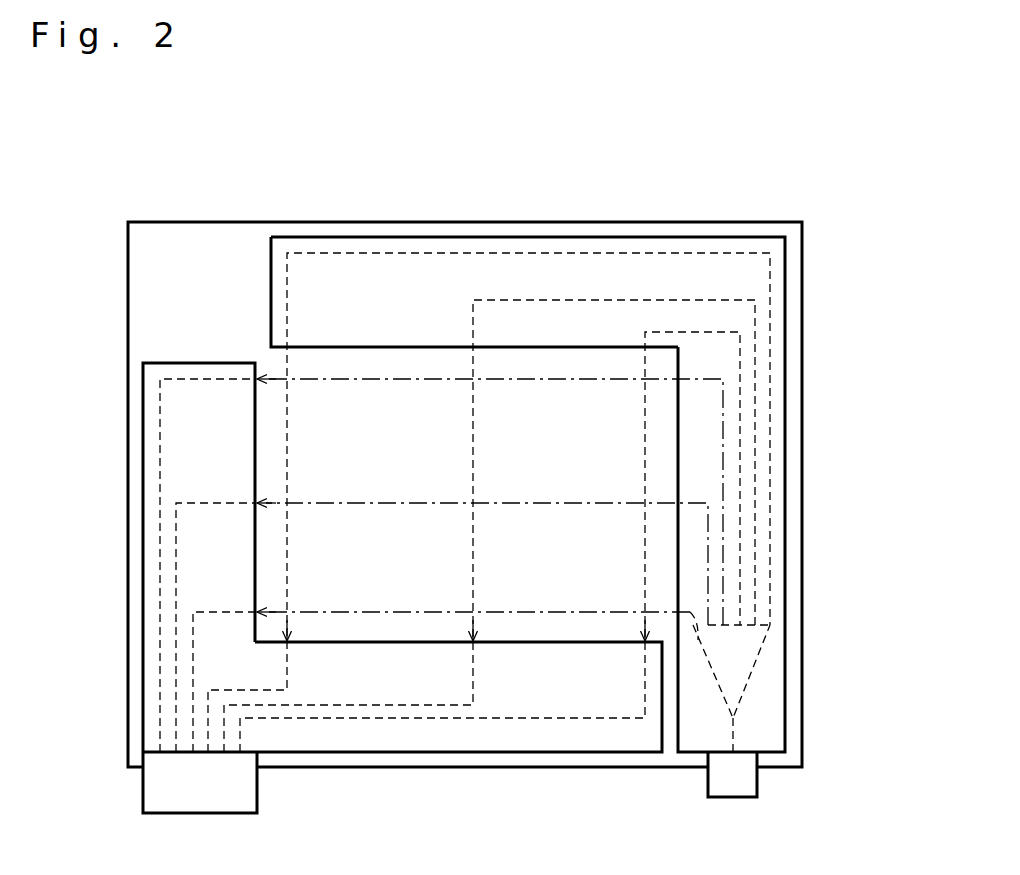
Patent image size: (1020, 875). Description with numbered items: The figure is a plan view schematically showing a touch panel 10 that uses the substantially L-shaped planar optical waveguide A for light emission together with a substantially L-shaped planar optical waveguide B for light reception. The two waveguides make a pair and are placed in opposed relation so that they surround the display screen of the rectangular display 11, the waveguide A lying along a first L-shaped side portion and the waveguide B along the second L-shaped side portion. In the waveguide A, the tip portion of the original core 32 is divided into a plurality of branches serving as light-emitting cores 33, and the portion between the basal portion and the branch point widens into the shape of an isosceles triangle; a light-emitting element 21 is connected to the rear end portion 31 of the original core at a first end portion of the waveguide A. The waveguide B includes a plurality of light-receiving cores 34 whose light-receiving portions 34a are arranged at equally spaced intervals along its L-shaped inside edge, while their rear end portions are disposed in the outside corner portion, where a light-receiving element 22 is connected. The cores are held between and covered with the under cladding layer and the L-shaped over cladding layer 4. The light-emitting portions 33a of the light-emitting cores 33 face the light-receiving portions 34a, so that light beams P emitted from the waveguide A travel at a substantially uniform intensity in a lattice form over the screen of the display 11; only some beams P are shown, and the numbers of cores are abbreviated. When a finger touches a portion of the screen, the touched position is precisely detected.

The touch panel 10 is at (166, 206).
The display 11 is at (370, 408).
The over cladding layer 4 is at (778, 347).
The light-emitting element 21 is at (740, 782).
The light-receiving element 22 is at (160, 787).
The rear end portion of the original core 31 is at (733, 735).
The original core 32 is at (740, 672).
The light-emitting cores 33 is at (693, 330).
The light-emitting portions 33a is at (473, 347).
The light-receiving cores 34 is at (222, 613).
The light-receiving portions 34a is at (256, 380).
The substantially L-shaped planar optical waveguide for light emission A is at (268, 283).
The substantially L-shaped planar optical waveguide for light reception B is at (188, 358).
The light beams P is at (577, 500).